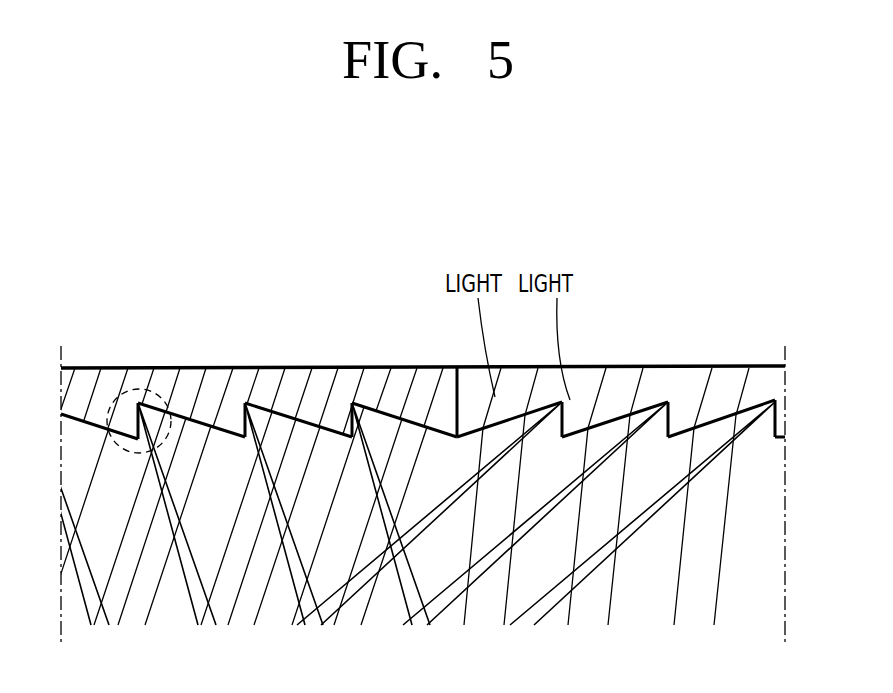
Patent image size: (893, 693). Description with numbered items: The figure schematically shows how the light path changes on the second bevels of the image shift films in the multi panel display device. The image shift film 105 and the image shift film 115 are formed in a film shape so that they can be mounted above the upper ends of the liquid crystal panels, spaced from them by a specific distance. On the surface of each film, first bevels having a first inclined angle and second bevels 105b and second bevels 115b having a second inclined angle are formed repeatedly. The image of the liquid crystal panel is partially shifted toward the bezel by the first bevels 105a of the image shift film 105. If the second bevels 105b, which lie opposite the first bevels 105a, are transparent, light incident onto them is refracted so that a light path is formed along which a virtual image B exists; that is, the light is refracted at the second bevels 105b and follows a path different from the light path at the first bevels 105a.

The image shift film 105 is at (300, 378).
The first bevels 105a is at (320, 407).
The second bevels 105b is at (243, 424).
The image shift film 115 is at (651, 400).
The second bevels 115b is at (568, 415).
The virtual image B is at (141, 389).